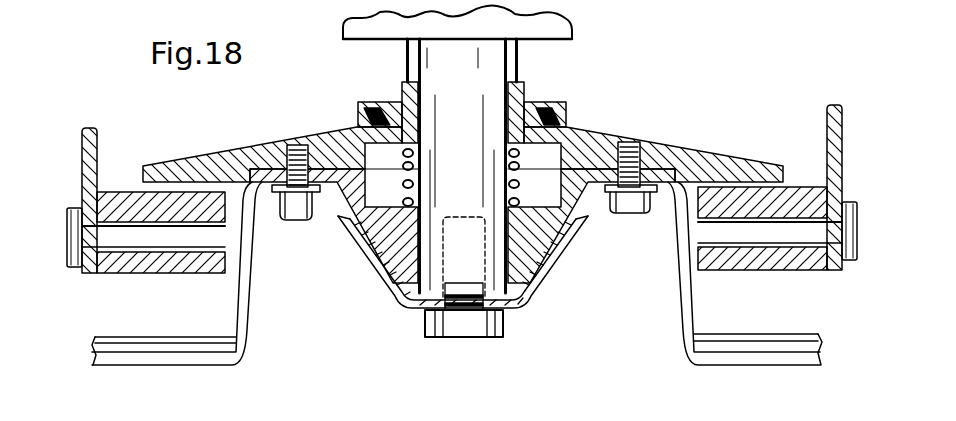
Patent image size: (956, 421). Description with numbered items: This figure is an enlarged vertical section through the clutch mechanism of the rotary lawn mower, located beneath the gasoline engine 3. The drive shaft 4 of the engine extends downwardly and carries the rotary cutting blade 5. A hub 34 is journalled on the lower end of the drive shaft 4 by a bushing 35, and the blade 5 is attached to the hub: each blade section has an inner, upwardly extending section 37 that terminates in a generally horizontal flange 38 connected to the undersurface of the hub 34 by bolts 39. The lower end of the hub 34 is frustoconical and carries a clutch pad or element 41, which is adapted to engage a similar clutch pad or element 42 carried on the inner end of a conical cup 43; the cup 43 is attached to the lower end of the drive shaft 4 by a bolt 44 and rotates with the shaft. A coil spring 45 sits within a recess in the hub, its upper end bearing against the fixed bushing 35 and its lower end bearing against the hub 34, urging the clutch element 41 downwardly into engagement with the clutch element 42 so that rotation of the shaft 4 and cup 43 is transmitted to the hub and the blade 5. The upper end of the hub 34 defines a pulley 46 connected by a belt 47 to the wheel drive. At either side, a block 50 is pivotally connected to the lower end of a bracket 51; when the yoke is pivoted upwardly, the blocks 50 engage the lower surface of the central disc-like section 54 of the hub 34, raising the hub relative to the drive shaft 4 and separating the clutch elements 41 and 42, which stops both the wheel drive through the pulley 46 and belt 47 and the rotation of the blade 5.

The gasoline engine 3 is at (557, 23).
The drive shaft 4 is at (492, 107).
The bushing 35 is at (524, 88).
The pulley 46 is at (378, 101).
The belt 47 is at (358, 117).
The coil spring 45 is at (517, 165).
The hub 34 is at (258, 146).
The central disc-like section 54 is at (718, 150).
The bracket 51 is at (99, 133).
The block 50 is at (148, 277).
The horizontal flange 38 is at (337, 183).
The bolts 39 is at (298, 221).
The upwardly extending section 37 is at (249, 322).
The rotary cutting blade 5 is at (776, 360).
The clutch pad or element 41 is at (385, 258).
The clutch pad or element 42 is at (553, 250).
The conical cup 43 is at (553, 291).
The bolt 44 is at (457, 338).